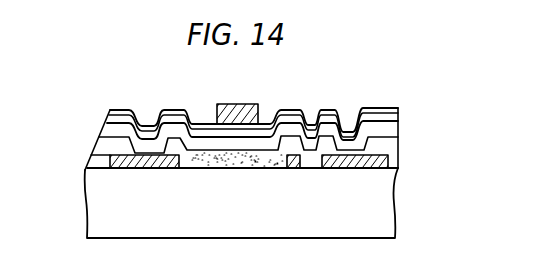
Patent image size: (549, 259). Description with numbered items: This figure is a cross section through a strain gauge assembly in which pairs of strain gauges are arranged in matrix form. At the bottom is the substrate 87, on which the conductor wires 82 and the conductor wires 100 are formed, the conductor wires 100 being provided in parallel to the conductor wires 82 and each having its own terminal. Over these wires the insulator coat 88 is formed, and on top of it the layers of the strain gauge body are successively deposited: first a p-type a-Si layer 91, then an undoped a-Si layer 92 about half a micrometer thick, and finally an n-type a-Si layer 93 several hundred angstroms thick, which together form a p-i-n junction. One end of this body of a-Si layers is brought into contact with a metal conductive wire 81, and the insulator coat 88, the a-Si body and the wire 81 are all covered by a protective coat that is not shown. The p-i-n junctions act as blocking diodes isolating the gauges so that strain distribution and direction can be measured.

The metal conductive wire 81 is at (237, 104).
The conductor wire 82 is at (131, 172).
The substrate 87 is at (388, 195).
The insulator coat 88 is at (213, 162).
The p-type a-Si layer 91 is at (400, 126).
The undoped a-Si layer 92 is at (384, 116).
The n-type a-Si layer 93 is at (353, 114).
The conductor wire 100 is at (278, 177).